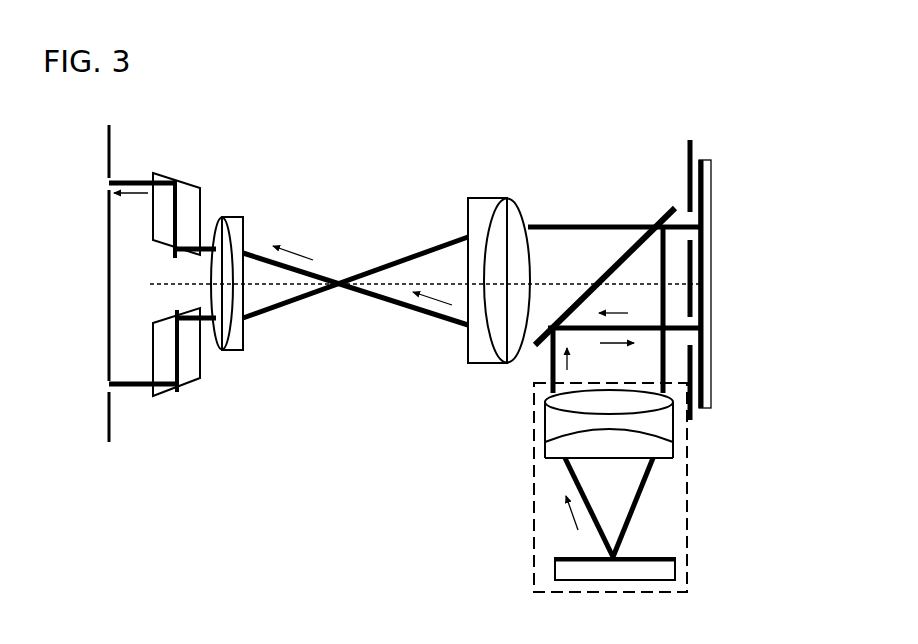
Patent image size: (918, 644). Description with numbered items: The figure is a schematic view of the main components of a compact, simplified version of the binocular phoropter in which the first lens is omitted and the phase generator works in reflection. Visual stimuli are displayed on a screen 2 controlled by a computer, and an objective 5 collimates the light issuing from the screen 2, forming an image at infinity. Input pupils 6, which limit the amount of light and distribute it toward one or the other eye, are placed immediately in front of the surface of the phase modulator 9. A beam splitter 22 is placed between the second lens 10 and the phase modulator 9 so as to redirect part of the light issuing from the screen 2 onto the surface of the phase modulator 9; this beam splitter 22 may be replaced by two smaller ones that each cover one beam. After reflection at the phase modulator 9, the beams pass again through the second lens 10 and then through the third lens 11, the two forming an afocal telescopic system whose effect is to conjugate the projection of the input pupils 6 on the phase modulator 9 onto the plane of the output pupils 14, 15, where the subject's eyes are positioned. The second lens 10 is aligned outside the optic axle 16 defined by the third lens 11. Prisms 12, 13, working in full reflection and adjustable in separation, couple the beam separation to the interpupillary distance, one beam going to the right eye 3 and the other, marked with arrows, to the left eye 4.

The screen 2 is at (552, 569).
The right eye 3 is at (643, 513).
The left eye 4 is at (565, 477).
The objective 5 is at (540, 421).
The input pupils 6 is at (682, 150).
The phase modulator 9 is at (706, 152).
The second lens 10 is at (482, 192).
The third lens 11 is at (228, 355).
The prism 12 is at (172, 397).
The prism 13 is at (168, 182).
The output pupil 14 is at (104, 180).
The output pupil 15 is at (104, 381).
The optic axle 16 is at (162, 287).
The beam splitter 22 is at (620, 252).